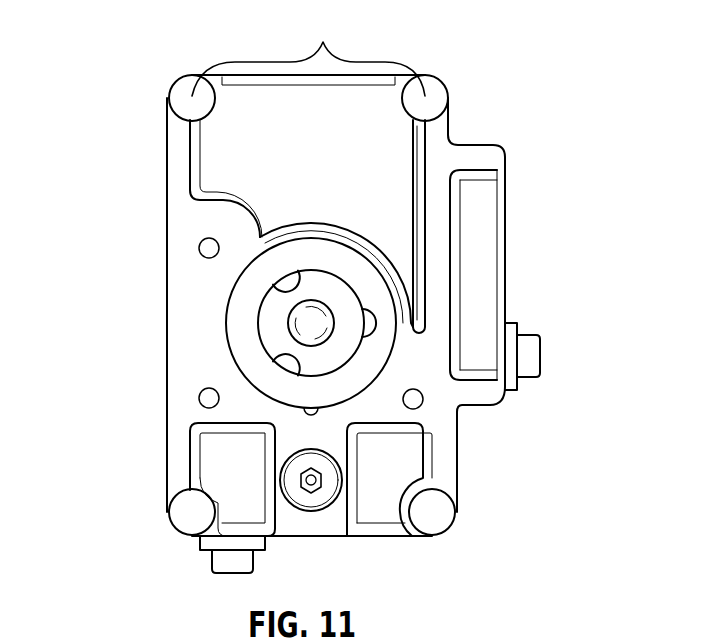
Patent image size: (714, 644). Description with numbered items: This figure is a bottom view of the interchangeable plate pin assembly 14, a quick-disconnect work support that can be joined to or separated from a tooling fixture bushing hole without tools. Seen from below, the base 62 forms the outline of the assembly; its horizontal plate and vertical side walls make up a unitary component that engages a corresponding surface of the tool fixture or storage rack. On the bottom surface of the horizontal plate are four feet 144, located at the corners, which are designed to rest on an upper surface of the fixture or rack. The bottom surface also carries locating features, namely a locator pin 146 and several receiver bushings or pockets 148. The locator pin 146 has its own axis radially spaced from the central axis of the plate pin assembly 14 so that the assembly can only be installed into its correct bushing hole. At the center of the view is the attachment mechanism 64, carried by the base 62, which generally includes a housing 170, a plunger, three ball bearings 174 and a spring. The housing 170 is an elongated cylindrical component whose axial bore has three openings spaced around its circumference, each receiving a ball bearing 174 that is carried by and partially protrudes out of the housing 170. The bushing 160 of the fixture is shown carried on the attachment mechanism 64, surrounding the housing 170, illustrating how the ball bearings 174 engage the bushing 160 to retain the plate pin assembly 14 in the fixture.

The plate pin assembly 14 is at (540, 100).
The base 62 is at (143, 447).
The attachment mechanism 64 is at (403, 254).
The feet 144 is at (308, 56).
The locator pin 146 is at (311, 493).
The receiver bushings or pockets 148 is at (320, 167).
The bushing 160 is at (337, 352).
The housing 170 is at (381, 335).
The ball bearings 174 is at (370, 321).